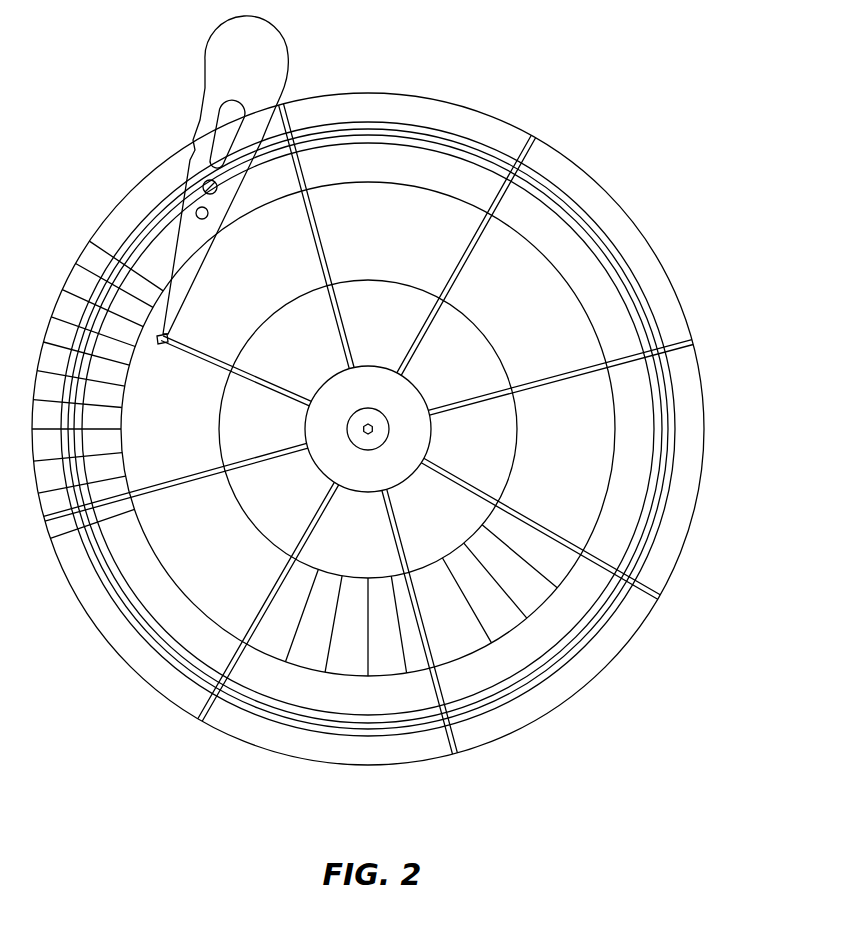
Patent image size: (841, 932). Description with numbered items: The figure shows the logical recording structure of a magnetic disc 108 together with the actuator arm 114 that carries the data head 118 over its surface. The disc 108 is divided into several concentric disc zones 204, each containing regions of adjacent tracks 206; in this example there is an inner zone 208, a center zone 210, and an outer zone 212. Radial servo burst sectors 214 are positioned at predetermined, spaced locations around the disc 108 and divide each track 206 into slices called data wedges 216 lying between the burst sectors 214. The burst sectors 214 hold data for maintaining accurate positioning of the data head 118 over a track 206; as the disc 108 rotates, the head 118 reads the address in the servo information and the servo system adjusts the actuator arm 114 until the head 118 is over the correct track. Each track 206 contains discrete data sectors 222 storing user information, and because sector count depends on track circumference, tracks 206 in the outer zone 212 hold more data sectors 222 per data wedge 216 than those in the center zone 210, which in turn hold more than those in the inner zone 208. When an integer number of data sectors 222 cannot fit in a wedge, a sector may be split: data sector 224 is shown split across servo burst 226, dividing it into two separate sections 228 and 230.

The disc 108 is at (522, 100).
The actuator arm 114 is at (188, 160).
The data head 118 is at (168, 346).
The concentric disc zones 204 is at (366, 171).
The tracks 206 is at (80, 562).
The inner zone 208 is at (438, 383).
The center zone 210 is at (505, 308).
The outer zone 212 is at (553, 251).
The radial servo burst sectors 214 is at (692, 338).
The data wedges 216 is at (553, 453).
The data sectors 222 is at (92, 424).
The split data sector 224 is at (420, 663).
The servo burst 226 is at (442, 682).
The first section of split data sector 228 is at (395, 575).
The second section of split data sector 230 is at (443, 643).